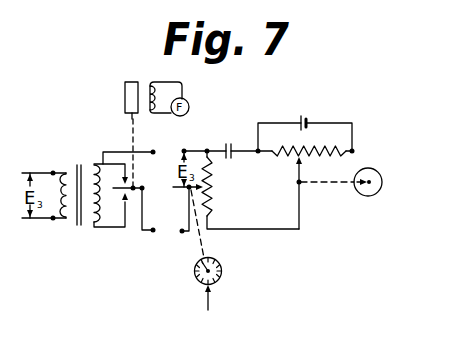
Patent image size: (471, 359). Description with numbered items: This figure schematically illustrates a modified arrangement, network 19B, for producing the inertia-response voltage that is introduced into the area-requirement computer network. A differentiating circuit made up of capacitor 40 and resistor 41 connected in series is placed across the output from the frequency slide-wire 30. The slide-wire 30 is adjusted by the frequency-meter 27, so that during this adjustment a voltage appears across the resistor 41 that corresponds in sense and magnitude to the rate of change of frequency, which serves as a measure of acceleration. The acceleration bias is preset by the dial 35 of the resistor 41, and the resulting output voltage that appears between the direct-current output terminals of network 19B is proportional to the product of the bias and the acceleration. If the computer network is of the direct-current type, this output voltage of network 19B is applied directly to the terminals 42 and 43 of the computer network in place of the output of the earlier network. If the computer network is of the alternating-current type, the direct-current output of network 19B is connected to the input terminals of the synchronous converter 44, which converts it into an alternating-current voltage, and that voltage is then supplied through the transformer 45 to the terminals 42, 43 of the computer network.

The terminal 42 is at (53, 171).
The terminal 43 is at (53, 220).
The transformer 45 is at (91, 152).
The synchronous converter 44 is at (134, 170).
The capacitor 40 is at (231, 155).
The resistor 41 is at (213, 201).
The frequency slide-wire 30 is at (305, 187).
The network 19B is at (362, 118).
The frequency-meter 27 is at (383, 182).
The dial 35 is at (223, 270).